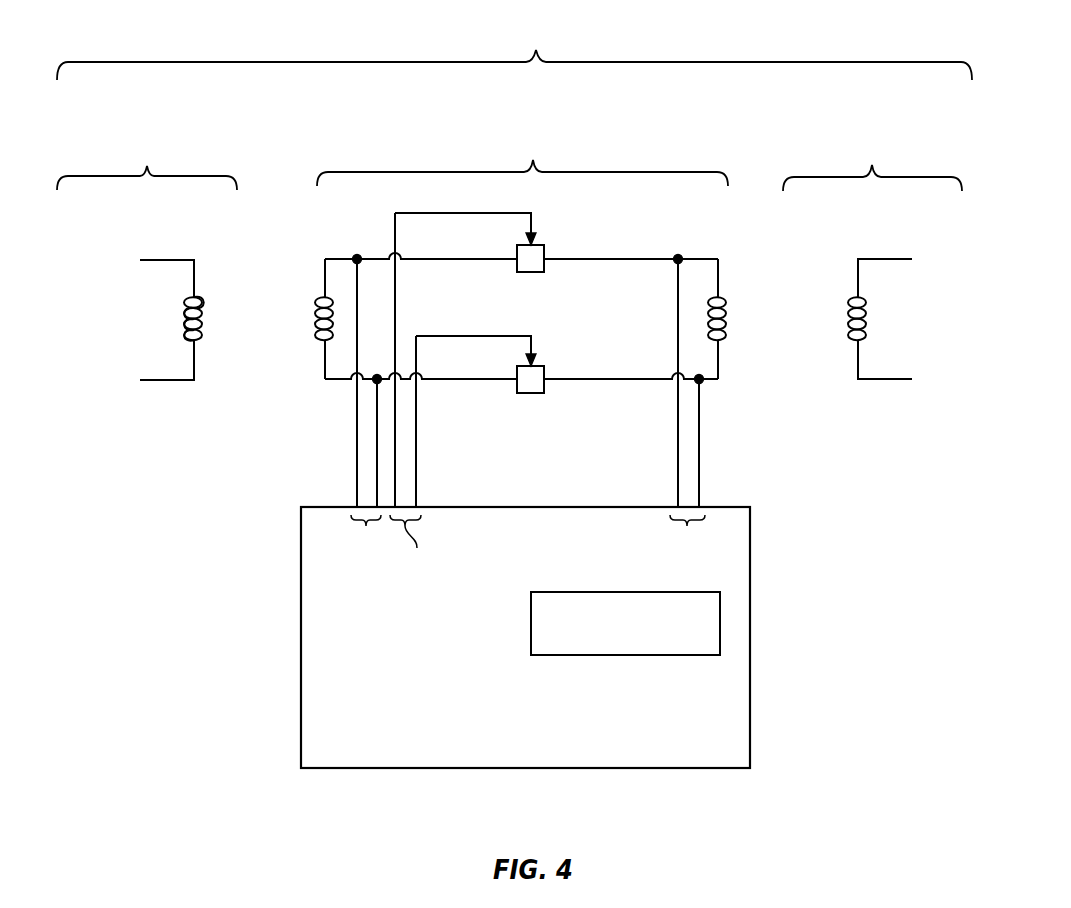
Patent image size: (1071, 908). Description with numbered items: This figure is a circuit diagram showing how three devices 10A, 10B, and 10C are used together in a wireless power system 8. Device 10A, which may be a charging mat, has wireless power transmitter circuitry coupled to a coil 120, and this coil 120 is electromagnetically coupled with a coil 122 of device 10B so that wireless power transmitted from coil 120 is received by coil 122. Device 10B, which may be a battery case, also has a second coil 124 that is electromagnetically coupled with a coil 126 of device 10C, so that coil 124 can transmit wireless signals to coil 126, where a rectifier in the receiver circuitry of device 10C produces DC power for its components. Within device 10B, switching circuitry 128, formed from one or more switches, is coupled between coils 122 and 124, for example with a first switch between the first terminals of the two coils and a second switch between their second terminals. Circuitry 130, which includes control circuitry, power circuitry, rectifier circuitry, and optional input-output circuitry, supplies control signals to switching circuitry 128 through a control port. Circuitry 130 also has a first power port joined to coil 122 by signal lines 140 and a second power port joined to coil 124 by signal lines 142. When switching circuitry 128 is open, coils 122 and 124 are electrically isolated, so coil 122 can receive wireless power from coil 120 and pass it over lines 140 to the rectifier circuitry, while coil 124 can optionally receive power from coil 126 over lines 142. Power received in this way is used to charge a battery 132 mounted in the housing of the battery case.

The system 8 is at (514, 52).
The device 10A is at (170, 261).
The device 10B is at (533, 453).
The device 10C is at (872, 265).
The coil 120 is at (215, 298).
The coil 122 is at (297, 333).
The coil 124 is at (741, 300).
The coil 126 is at (838, 336).
The switching circuitry 128 is at (544, 268).
The circuitry 130 is at (750, 622).
The battery 132 is at (688, 655).
The signal lines 140 is at (357, 450).
The signal lines 142 is at (699, 450).